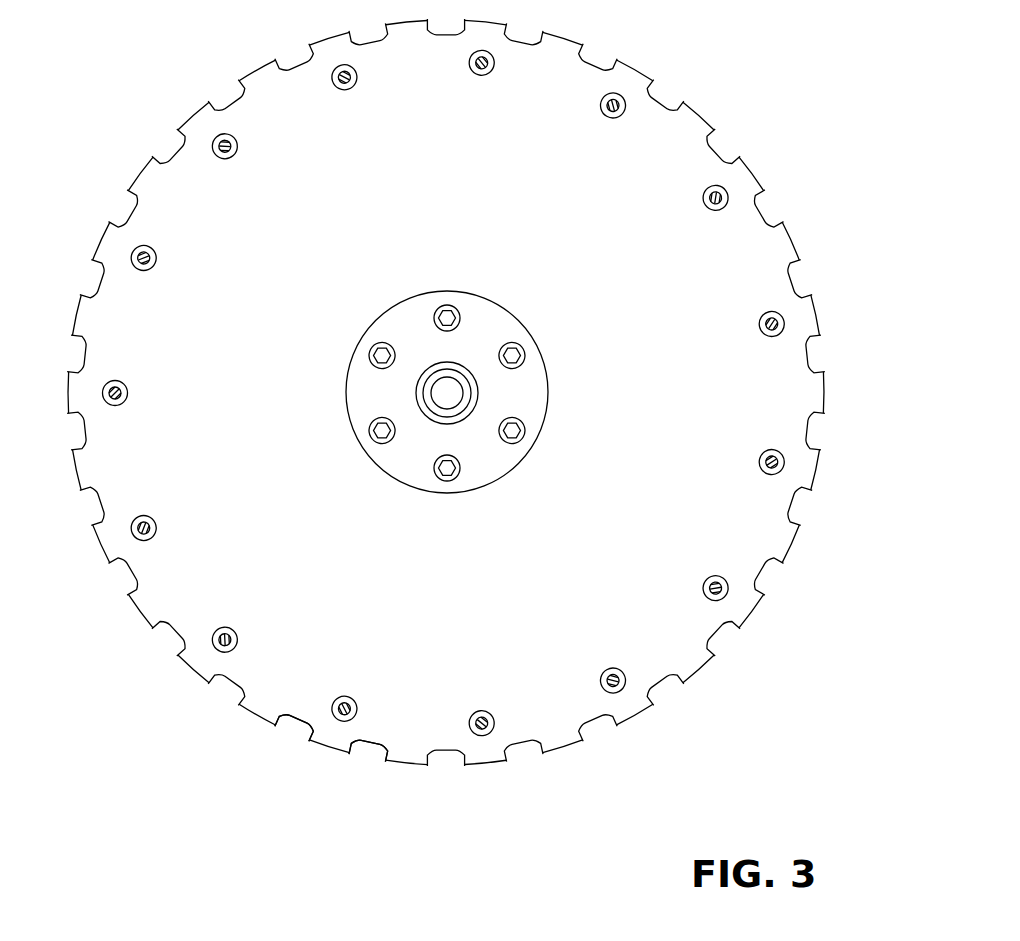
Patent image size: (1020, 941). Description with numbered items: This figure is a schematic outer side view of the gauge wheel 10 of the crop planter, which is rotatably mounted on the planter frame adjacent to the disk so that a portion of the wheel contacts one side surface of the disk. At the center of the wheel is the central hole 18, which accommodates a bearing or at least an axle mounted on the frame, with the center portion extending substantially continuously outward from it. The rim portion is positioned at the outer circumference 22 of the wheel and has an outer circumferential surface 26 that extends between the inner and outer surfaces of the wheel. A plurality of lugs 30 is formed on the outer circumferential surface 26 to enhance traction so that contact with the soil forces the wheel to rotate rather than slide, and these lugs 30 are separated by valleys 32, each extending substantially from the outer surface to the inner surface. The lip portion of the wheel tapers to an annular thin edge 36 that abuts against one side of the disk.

The gauge wheel 10 is at (445, 425).
The central hole 18 is at (463, 420).
The outer circumference 22 is at (186, 678).
The outer circumferential surface 26 is at (563, 749).
The lugs 30 is at (250, 718).
The valleys 32 is at (296, 727).
The thin edge 36 is at (367, 759).